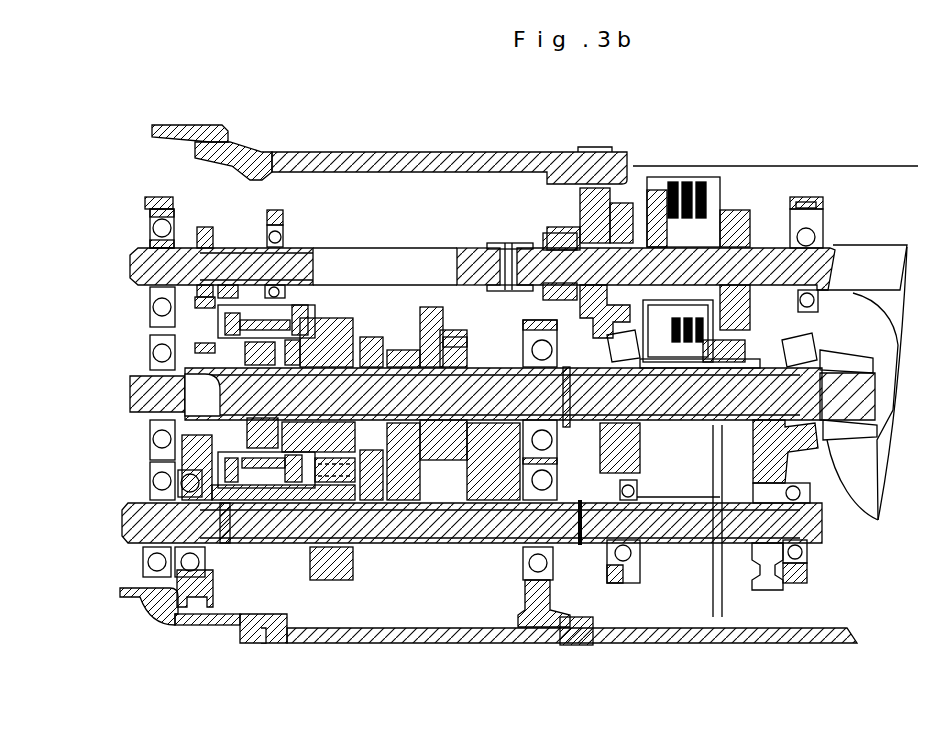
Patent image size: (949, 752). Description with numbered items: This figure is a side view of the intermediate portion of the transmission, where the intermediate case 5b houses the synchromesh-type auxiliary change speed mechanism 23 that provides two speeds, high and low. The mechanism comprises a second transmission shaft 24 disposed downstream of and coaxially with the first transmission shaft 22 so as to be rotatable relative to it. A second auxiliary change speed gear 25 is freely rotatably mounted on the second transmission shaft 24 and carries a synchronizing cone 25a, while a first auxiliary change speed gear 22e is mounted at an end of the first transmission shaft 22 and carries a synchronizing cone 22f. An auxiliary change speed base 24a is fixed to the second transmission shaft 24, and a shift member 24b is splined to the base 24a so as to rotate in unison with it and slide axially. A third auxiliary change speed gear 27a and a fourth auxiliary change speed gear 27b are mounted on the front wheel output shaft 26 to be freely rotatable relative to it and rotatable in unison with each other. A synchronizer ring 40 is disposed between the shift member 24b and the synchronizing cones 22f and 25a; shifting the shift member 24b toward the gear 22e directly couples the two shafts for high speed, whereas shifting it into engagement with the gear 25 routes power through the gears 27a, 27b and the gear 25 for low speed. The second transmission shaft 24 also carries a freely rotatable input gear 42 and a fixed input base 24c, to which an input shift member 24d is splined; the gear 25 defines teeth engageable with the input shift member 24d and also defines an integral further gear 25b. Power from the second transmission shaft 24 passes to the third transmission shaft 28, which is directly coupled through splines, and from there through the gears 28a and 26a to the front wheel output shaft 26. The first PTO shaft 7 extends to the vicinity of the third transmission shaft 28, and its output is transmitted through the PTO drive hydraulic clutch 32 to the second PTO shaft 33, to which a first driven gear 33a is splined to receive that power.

The intermediate case 5b is at (427, 150).
The first PTO shaft 7 is at (440, 248).
The first transmission shaft 22 is at (135, 425).
The first auxiliary change speed gear 22e is at (200, 363).
The synchronizing cone 22f is at (236, 298).
The auxiliary change speed mechanism 23 is at (350, 300).
The second transmission shaft 24 is at (416, 400).
The auxiliary change speed base 24a is at (275, 420).
The shift member 24b is at (272, 470).
The input base 24c is at (440, 353).
The input shift member 24d is at (457, 330).
The second auxiliary change speed gear 25 is at (357, 330).
The synchronizing cone 25a is at (325, 300).
The further gear 25b is at (388, 450).
The front wheel output shaft 26 is at (500, 545).
The gear 26a is at (770, 590).
The third auxiliary change speed gear 27a is at (200, 603).
The fourth auxiliary change speed gear 27b is at (340, 580).
The third transmission shaft 28 is at (672, 405).
The gear 28a is at (775, 430).
The PTO drive hydraulic clutch 32 is at (676, 172).
The second PTO shaft 33 is at (882, 245).
The first driven gear 33a is at (740, 215).
The synchronizer ring 40 is at (256, 466).
The input gear 42 is at (492, 307).